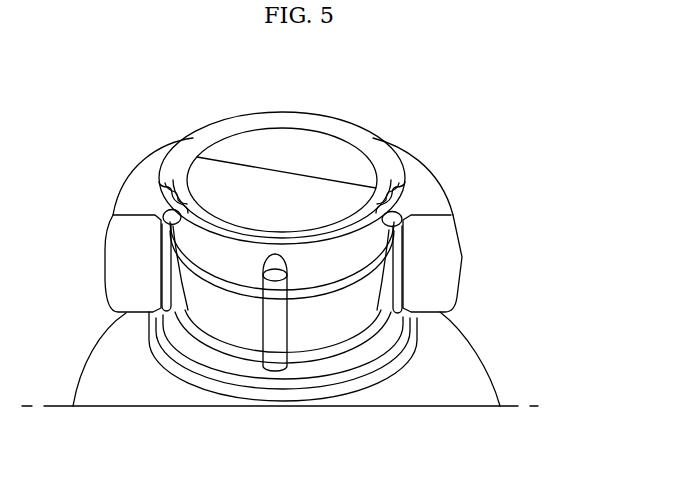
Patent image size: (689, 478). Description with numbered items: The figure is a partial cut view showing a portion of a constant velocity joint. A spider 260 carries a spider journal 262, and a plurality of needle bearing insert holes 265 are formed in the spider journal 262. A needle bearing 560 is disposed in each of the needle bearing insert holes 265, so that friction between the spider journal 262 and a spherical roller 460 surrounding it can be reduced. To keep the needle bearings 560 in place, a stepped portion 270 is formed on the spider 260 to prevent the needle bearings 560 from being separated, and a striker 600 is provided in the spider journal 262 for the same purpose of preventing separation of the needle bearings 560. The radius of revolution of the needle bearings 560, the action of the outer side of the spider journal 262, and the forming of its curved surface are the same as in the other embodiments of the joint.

The spider 260 is at (496, 363).
The spider journal 262 is at (311, 137).
The needle bearing insert holes 265 is at (273, 253).
The stepped portion 270 is at (388, 327).
The spherical roller 460 is at (454, 263).
The needle bearing 560 is at (275, 368).
The striker 600 is at (385, 155).